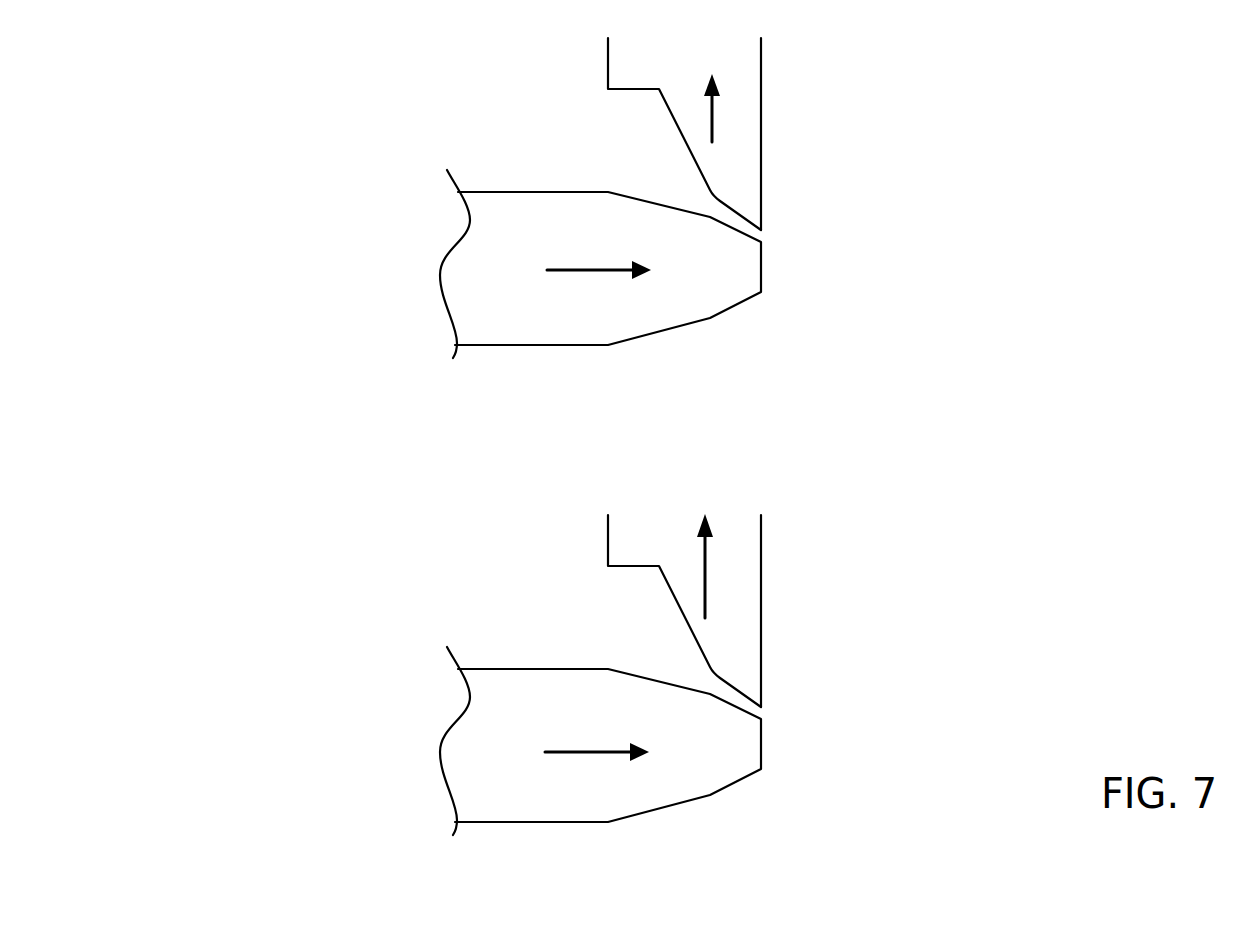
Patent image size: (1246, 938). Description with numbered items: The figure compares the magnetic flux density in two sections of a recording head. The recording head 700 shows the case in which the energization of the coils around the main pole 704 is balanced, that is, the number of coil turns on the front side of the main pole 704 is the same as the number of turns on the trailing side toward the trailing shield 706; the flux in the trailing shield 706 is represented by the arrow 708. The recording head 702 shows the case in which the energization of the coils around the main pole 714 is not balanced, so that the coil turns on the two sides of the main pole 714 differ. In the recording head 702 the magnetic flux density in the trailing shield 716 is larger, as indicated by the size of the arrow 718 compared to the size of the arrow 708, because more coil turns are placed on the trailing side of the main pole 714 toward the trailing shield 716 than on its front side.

The recording head 700 is at (222, 111).
The recording head 702 is at (222, 623).
The main pole 704 is at (443, 298).
The trailing shield 706 is at (762, 140).
The arrow 708 is at (722, 106).
The main pole 714 is at (438, 748).
The trailing shield 716 is at (762, 609).
The arrow 718 is at (732, 574).